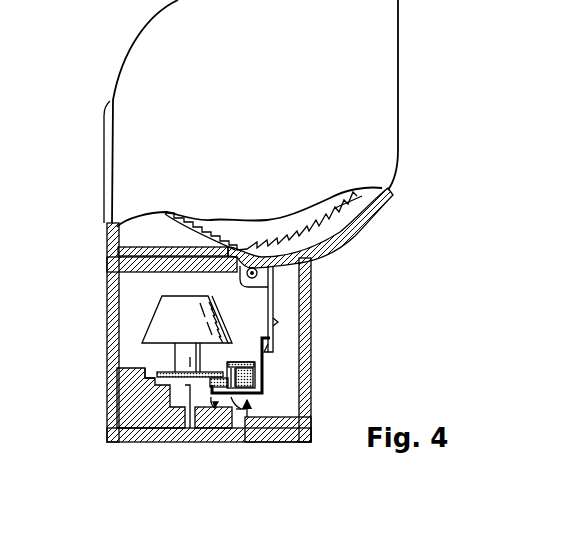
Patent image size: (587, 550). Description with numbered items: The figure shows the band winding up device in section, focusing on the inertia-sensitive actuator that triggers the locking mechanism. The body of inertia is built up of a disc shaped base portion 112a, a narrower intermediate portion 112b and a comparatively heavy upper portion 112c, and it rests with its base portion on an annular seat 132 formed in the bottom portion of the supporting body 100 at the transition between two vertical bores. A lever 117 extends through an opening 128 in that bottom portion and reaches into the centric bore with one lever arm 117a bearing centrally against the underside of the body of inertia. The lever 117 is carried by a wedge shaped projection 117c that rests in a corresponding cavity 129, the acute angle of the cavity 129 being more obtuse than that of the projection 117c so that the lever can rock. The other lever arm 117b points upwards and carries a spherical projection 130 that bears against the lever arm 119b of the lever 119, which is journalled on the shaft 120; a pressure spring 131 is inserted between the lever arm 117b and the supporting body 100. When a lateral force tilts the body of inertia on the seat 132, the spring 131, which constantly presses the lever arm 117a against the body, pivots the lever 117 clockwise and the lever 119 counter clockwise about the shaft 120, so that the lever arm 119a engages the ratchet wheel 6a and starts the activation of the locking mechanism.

The ratchet wheel 6a is at (385, 198).
The supporting body 100 is at (122, 400).
The lever arm 119a is at (314, 258).
The shaft 120 is at (253, 268).
The lever 119 is at (276, 297).
The lever arm 119b is at (272, 313).
The spherical projection 130 is at (278, 322).
The lever arm 117b is at (253, 366).
The pressure spring 131 is at (255, 375).
The opening 128 is at (257, 384).
The upper portion 112c is at (173, 320).
The intermediate portion 112b is at (183, 357).
The seat 132 is at (146, 380).
The base portion 112a is at (160, 436).
The lever arm 117a is at (193, 440).
The cavity 129 is at (218, 440).
The wedge shaped projection 117c is at (238, 440).
The lever 117 is at (253, 440).